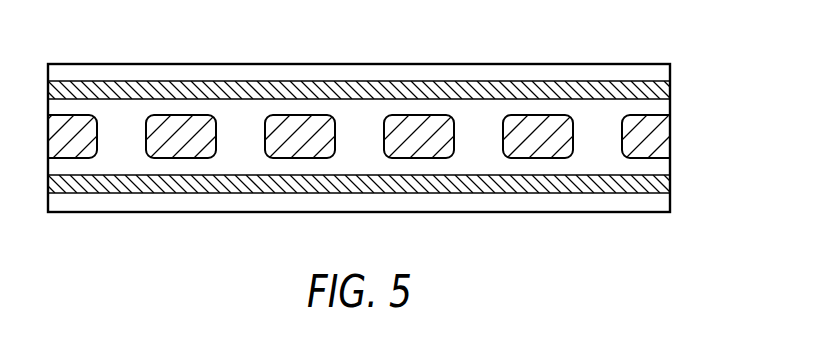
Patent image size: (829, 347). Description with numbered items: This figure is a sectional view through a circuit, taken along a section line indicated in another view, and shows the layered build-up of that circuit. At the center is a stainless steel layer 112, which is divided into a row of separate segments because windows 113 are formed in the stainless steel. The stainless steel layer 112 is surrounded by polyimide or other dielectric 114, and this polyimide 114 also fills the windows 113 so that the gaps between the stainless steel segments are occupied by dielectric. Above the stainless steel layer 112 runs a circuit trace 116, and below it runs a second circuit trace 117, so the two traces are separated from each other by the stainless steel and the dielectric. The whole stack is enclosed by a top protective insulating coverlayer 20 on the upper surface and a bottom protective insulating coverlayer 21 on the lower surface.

The top protective insulating coverlayer 20 is at (636, 64).
The bottom protective insulating coverlayer 21 is at (633, 211).
The stainless steel layer 112 is at (672, 130).
The windows 113 is at (594, 140).
The polyimide or other dielectric 114 is at (656, 106).
The circuit trace 116 is at (510, 81).
The circuit trace 117 is at (498, 193).